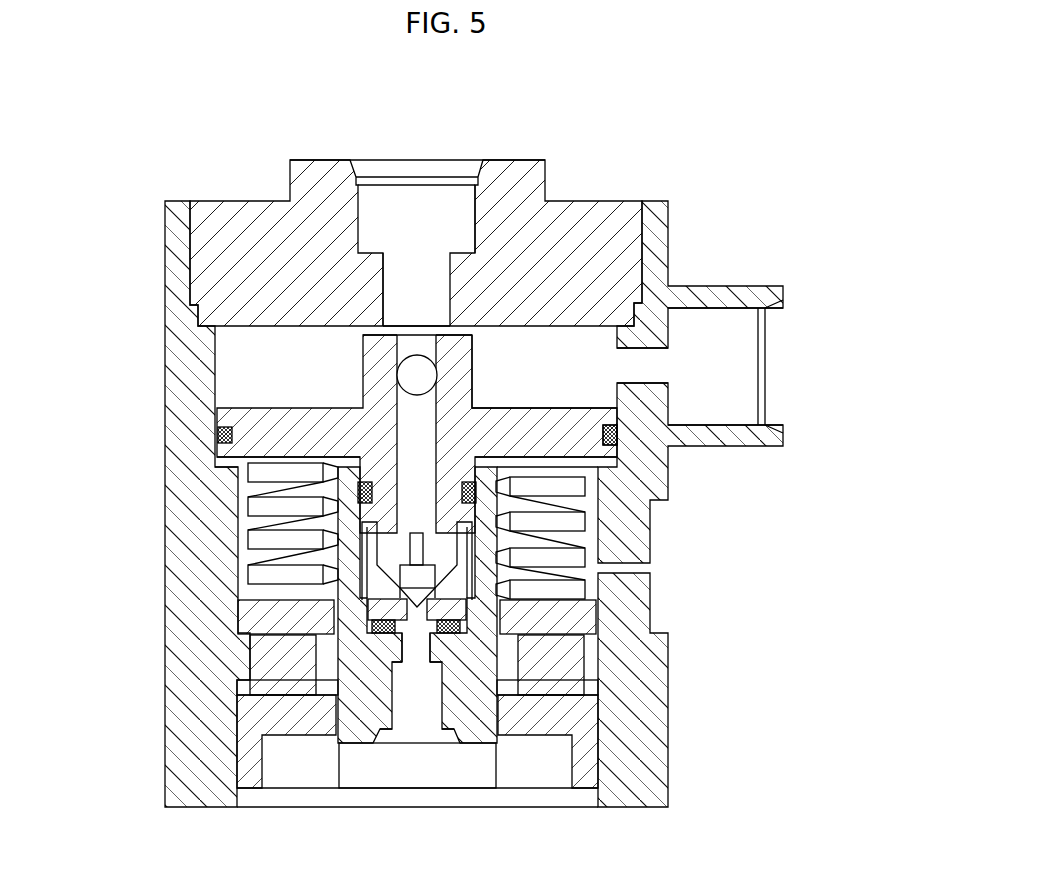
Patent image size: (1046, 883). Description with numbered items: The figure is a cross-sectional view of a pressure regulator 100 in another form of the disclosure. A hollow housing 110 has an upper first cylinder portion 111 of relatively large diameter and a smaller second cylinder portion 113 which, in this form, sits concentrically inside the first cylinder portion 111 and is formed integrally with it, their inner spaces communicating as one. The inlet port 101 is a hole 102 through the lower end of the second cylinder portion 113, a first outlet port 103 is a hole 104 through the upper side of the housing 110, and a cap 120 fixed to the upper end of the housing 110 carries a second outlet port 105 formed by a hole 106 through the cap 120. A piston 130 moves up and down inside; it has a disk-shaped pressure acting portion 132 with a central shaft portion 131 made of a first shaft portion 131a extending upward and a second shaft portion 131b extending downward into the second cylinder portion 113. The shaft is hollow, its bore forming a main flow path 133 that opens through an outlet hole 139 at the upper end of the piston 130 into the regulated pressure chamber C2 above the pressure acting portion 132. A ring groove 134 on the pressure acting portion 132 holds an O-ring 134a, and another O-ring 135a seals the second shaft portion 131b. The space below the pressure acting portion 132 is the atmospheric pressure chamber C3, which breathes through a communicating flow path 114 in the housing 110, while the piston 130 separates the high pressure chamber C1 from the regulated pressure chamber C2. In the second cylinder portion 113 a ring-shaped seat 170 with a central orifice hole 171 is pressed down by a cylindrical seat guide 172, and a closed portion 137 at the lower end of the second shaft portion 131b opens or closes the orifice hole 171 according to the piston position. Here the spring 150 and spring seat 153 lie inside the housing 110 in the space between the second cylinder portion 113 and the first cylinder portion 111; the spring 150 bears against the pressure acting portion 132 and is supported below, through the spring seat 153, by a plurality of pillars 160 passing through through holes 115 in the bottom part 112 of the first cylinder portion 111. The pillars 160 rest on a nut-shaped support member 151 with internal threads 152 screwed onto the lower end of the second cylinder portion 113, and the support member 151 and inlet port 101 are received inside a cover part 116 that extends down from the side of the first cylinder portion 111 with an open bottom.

The pressure regulator 100 is at (772, 122).
The inlet port 101 is at (450, 735).
The hole 102 is at (440, 700).
The first outlet port 103 is at (740, 326).
The hole 104 is at (645, 352).
The second outlet port 105 is at (410, 195).
The hole 106 is at (383, 295).
The housing 110 is at (165, 545).
The first cylinder portion 111 is at (218, 434).
The bottom part 112 is at (305, 725).
The second cylinder portion 113 is at (352, 570).
The communicating flow path 114 is at (628, 567).
The through holes 115 is at (545, 662).
The cover part 116 is at (640, 768).
The cap 120 is at (545, 161).
The piston 130 is at (474, 328).
The shaft portion 131 is at (87, 292).
The first shaft portion 131a is at (377, 370).
The second shaft portion 131b is at (387, 493).
The pressure acting portion 132 is at (562, 432).
The main flow path 133 is at (455, 410).
The ring groove 134 is at (618, 436).
The O-ring 134a is at (620, 430).
The O-ring 135a is at (335, 468).
The closed portion 137 is at (393, 633).
The outlet hole 139 is at (474, 252).
The spring 150 is at (595, 510).
The support member 151 is at (588, 718).
The threads 152 is at (480, 745).
The spring seat 153 is at (590, 622).
The pillars 160 is at (290, 615).
The seat 170 is at (468, 607).
The orifice hole 171 is at (465, 575).
The seat guide 172 is at (428, 556).
The high pressure chamber C1 is at (414, 712).
The regulated pressure chamber C2 is at (587, 351).
The atmospheric pressure chamber C3 is at (240, 553).